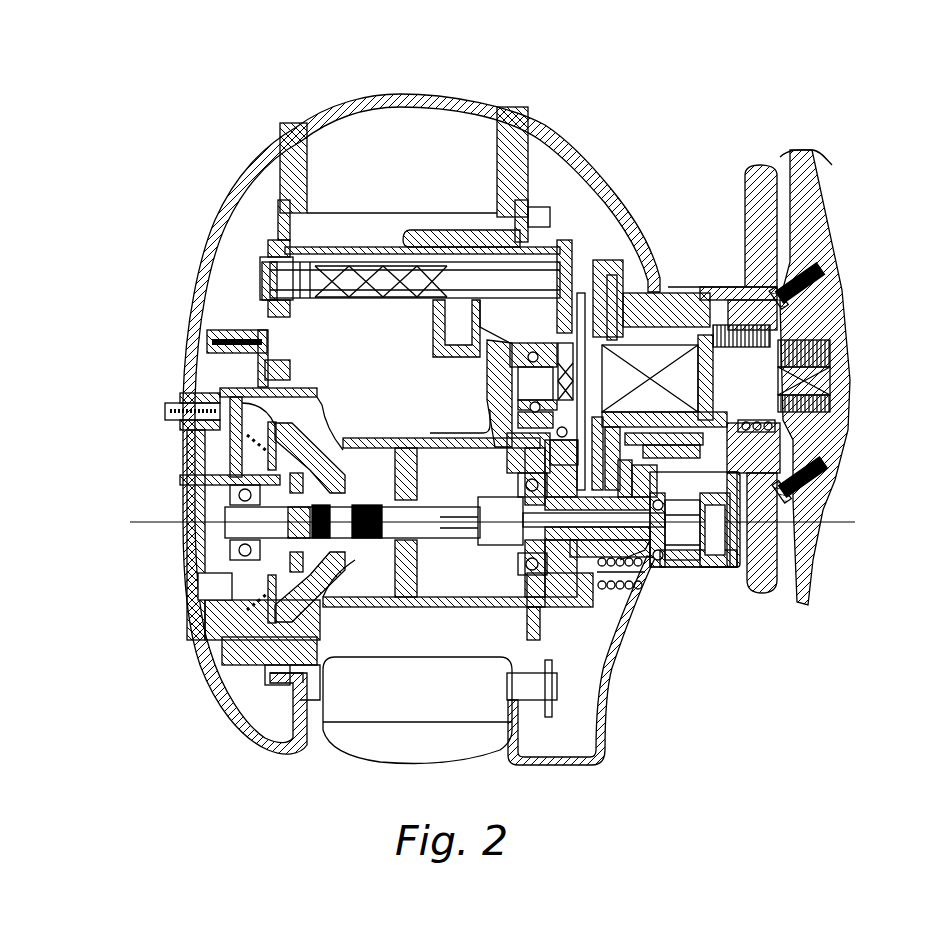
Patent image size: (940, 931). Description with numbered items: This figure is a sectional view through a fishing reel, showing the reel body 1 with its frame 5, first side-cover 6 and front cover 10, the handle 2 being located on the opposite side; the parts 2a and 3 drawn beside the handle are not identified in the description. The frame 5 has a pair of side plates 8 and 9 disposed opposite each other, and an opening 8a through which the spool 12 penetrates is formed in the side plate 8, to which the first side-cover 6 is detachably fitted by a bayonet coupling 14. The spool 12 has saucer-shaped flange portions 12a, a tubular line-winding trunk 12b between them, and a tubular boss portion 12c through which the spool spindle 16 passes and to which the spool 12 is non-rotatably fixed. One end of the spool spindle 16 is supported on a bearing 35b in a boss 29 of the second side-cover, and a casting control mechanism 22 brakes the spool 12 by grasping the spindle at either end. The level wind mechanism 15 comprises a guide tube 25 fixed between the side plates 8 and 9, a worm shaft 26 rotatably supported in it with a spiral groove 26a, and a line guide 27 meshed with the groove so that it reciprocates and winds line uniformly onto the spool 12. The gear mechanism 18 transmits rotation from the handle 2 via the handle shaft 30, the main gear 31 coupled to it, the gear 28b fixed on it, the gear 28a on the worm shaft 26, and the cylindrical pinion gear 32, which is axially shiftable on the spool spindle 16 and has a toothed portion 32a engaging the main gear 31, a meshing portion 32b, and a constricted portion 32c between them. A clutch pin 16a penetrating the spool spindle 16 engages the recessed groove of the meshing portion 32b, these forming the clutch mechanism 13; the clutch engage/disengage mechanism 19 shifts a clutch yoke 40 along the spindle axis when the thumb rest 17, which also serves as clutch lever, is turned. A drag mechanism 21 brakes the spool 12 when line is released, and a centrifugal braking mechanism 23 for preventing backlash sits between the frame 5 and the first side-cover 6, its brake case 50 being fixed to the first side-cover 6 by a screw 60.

The reel body 1 is at (454, 103).
The handle 2 is at (812, 200).
The frame top portion 2a is at (797, 150).
The mounting lug 3 is at (753, 168).
The frame 5 is at (548, 128).
The first side-cover 6 is at (212, 235).
The side plate 8 is at (292, 325).
The opening 8a is at (284, 396).
The side plate 9 is at (465, 372).
The front cover 10 is at (394, 105).
The spool 12 is at (380, 440).
The flange portions 12a is at (325, 402).
The line-winding trunk 12b is at (448, 449).
The boss portion 12c is at (345, 503).
The clutch mechanism 13 is at (507, 492).
The bayonet coupling 14 is at (265, 688).
The level wind mechanism 15 is at (395, 247).
The spool spindle 16 is at (338, 448).
The clutch pin 16a is at (487, 540).
The thumb rest 17 is at (382, 692).
The gear mechanism 18 is at (612, 215).
The clutch engage/disengage mechanism 19 is at (612, 600).
The drag mechanism 21 is at (640, 302).
The casting control mechanism 22 is at (785, 492).
The centrifugal braking mechanism 23 is at (348, 572).
The guide tube 25 is at (330, 262).
The worm shaft 26 is at (410, 290).
The spiral groove 26a is at (365, 262).
The line guide 27 is at (455, 228).
The gear 28a is at (562, 258).
The gear 28b is at (562, 442).
The boss 29 is at (745, 570).
The handle shaft 30 is at (672, 360).
The main gear 31 is at (600, 275).
The pinion gear 32 is at (665, 574).
The toothed portion 32a is at (688, 580).
The meshing portion 32b is at (510, 555).
The constricted portion 32c is at (556, 608).
The bearing 35b is at (715, 578).
The clutch yoke 40 is at (620, 570).
The brake case 50 is at (213, 378).
The screw 60 is at (246, 338).